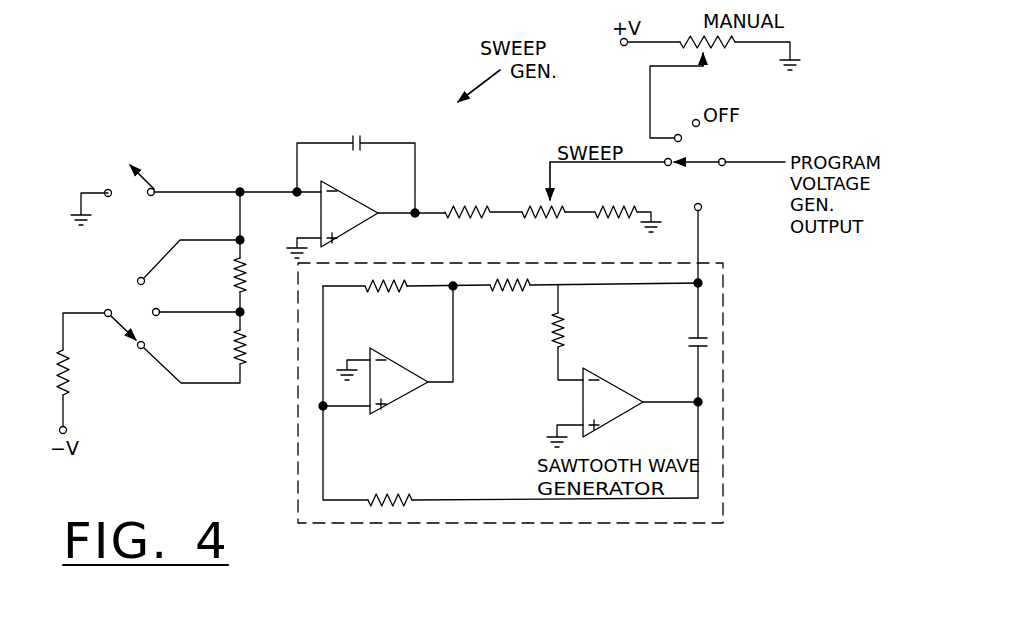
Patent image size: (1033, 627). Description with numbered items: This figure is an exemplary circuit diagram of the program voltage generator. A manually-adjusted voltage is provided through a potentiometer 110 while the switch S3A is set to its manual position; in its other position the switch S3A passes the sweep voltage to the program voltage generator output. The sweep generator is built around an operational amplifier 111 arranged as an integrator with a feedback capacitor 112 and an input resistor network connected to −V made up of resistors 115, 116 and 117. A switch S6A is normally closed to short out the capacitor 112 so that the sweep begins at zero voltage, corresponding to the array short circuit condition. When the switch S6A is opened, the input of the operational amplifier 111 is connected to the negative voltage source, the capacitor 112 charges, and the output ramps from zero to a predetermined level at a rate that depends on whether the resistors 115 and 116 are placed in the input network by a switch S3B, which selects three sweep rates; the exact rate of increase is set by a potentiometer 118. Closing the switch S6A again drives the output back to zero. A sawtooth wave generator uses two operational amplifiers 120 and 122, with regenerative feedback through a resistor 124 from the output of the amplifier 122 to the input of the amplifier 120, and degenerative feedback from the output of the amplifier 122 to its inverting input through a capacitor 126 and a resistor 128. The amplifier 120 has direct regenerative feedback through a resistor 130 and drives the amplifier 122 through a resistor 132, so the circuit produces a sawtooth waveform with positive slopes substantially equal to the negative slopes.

The potentiometer 110 is at (708, 52).
The operational amplifier 111 is at (362, 222).
The feedback capacitor 112 is at (355, 152).
The resistor 115 is at (236, 286).
The resistor 116 is at (236, 356).
The resistor 117 is at (58, 388).
The potentiometer 118 is at (546, 220).
The operational amplifier 120 is at (418, 366).
The operational amplifier 122 is at (623, 396).
The resistor 124 is at (390, 494).
The capacitor 126 is at (708, 344).
The resistor 128 is at (548, 344).
The resistor 130 is at (398, 276).
The resistor 132 is at (508, 276).
The switch S6A is at (140, 186).
The switch S3A is at (702, 155).
The switch S3B is at (118, 340).